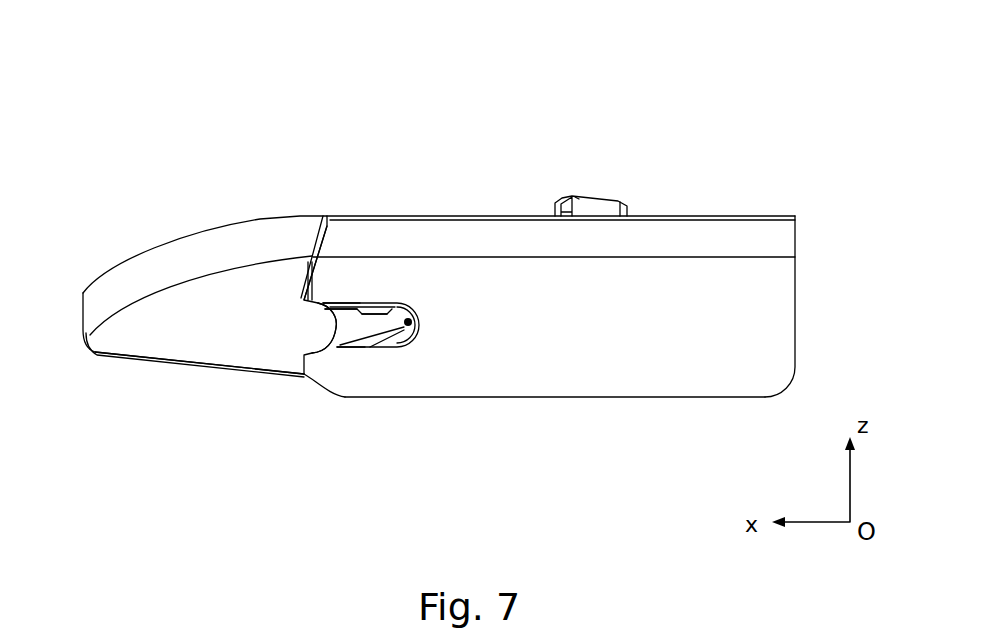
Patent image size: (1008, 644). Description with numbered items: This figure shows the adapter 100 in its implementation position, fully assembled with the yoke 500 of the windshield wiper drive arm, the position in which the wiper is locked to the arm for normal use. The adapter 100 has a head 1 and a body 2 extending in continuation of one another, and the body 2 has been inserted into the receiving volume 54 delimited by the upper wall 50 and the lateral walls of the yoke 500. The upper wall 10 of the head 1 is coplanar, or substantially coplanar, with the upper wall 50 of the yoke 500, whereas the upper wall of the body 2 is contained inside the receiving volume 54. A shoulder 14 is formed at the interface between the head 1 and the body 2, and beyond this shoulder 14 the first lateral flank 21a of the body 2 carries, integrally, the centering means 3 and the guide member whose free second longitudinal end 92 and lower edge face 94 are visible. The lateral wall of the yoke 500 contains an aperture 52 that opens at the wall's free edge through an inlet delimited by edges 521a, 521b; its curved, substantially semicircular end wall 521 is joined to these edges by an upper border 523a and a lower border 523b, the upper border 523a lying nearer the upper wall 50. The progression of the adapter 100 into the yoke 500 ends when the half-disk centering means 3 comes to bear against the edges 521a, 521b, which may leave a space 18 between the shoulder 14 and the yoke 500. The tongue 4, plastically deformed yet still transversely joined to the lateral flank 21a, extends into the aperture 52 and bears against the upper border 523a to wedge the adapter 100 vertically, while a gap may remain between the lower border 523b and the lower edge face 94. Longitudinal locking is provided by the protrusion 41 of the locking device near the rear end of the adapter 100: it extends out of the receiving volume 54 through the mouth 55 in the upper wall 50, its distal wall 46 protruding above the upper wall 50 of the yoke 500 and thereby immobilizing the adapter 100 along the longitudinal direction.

The adapter 100 is at (157, 141).
The head 1 is at (159, 231).
The upper wall of the head 10 is at (181, 231).
The shoulder 14 is at (310, 370).
The space 18 is at (307, 282).
The centering means 3 is at (320, 340).
The yoke 500 is at (717, 176).
The upper wall of the yoke 50 is at (525, 216).
The mouth 55 is at (642, 216).
The receiving volume 54 is at (631, 411).
The protrusion 41 is at (603, 183).
The distal wall 46 is at (580, 198).
The aperture 52 is at (419, 295).
The end wall 521 is at (420, 336).
The edge of the aperture 521a is at (303, 300).
The edge of the aperture 521b is at (315, 352).
The upper border 523a is at (378, 303).
The lower border 523b is at (390, 350).
The second longitudinal end 92 is at (408, 332).
The lower edge face 94 is at (362, 349).
The tongue 4 is at (348, 307).
The body 2 is at (335, 307).
The first lateral flank of the body 21a is at (320, 185).